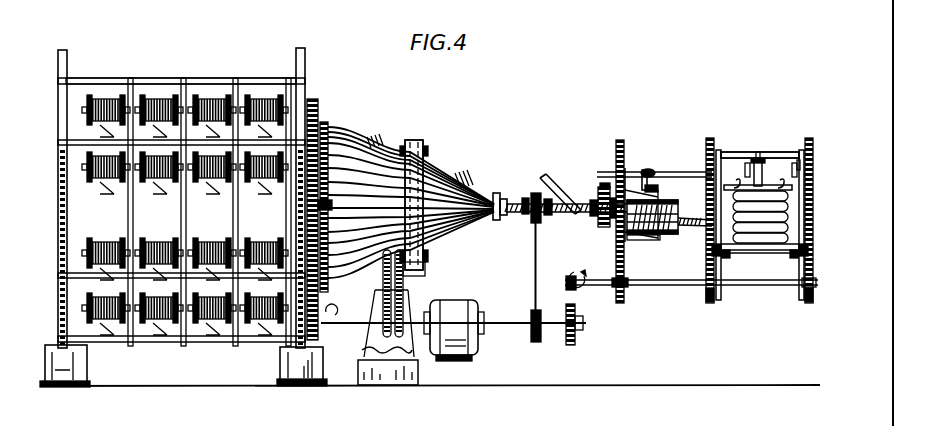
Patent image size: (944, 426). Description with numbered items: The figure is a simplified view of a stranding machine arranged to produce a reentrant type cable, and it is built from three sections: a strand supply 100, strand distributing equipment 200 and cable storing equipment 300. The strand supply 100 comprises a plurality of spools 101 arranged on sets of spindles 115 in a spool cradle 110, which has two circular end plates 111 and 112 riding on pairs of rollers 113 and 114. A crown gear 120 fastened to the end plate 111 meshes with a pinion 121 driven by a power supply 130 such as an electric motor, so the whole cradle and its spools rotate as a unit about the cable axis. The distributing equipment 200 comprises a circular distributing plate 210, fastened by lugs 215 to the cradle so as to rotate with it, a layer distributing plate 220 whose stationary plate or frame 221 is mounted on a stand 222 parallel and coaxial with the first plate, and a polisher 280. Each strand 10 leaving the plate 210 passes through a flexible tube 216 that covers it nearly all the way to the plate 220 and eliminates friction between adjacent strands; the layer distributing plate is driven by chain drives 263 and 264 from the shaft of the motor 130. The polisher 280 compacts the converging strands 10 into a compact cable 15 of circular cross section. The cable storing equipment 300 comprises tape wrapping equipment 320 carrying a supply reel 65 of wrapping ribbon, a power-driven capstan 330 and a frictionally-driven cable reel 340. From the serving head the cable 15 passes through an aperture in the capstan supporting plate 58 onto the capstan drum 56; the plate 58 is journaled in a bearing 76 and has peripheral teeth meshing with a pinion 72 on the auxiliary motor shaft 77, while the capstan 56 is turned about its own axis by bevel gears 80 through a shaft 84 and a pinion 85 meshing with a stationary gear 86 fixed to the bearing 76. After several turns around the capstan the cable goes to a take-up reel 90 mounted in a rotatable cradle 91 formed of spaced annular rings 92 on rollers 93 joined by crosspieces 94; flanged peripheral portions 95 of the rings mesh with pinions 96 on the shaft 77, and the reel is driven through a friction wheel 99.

The strand supply 100 is at (192, 48).
The circular end plate 112 is at (64, 50).
The circular end plate 111 is at (302, 48).
The spool cradle 110 is at (210, 79).
The spindles 115 is at (168, 86).
The spools 101 is at (263, 98).
The rollers 114 is at (67, 376).
The rollers 113 is at (301, 381).
The crown gear 120 is at (312, 99).
The lugs 215 is at (325, 124).
The circular distributing plate 210 is at (328, 131).
The flexible tube 216 is at (377, 134).
The layer distributing plate 220 is at (421, 142).
The stationary plate or frame 221 is at (421, 276).
The strand distributing equipment 200 is at (460, 89).
The strands 10 is at (466, 170).
The polisher 280 is at (499, 193).
The cable 15 is at (515, 214).
The tape wrapping equipment 320 is at (556, 174).
The supply reel 65 is at (556, 192).
The bearing 76 is at (598, 218).
The stationary gear 86 is at (604, 230).
The pinion 85 is at (603, 186).
The power-driven capstan 330 is at (675, 158).
The capstan supporting plate 58 is at (623, 262).
The pinion 72 is at (620, 301).
The shaft 84 is at (637, 177).
The bevel gears 80 is at (650, 170).
The capstan drum 56 is at (661, 238).
The auxiliary motor shaft 77 is at (656, 286).
The cable storing equipment 300 is at (680, 89).
The flanged peripheral portions 95 is at (712, 138).
The pinions 96 is at (710, 302).
The annular rings 92 is at (720, 152).
The crosspieces 94 is at (738, 156).
The rotatable cradle 91 is at (767, 254).
The rollers 93 is at (705, 256).
The friction wheel 99 is at (758, 157).
The frictionally-driven cable reel 340 is at (768, 172).
The take-up reel 90 is at (755, 184).
The chain drive 263 is at (384, 279).
The chain drive 264 is at (396, 300).
The pinion 121 is at (321, 336).
The power supply 130 is at (480, 340).
The stand 222 is at (376, 386).